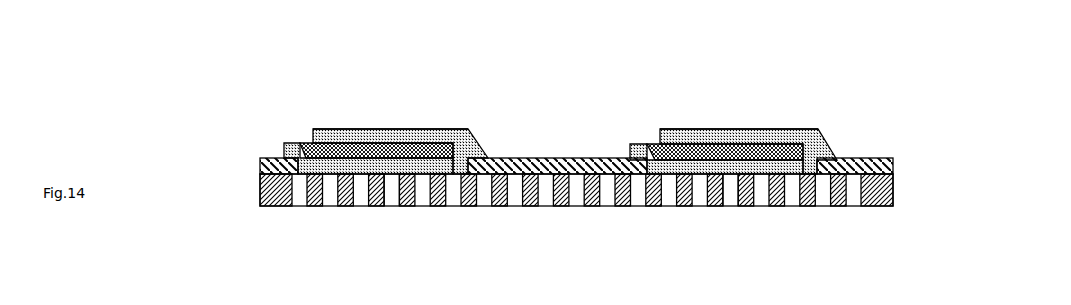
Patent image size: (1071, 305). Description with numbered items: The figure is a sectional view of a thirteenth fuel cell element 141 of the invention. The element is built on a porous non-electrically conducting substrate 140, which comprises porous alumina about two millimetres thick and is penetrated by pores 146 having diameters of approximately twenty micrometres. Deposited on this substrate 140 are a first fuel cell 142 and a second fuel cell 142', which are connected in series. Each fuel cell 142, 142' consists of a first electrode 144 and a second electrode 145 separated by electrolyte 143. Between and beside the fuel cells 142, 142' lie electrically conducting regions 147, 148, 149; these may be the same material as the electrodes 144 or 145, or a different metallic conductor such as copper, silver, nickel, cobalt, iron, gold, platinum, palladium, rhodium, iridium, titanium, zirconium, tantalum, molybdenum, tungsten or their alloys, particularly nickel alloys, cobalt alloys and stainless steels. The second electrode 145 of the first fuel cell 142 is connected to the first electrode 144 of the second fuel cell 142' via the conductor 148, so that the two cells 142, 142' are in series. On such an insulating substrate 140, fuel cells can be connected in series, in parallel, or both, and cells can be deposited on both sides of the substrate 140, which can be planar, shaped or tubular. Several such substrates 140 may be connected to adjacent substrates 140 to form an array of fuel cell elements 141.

The porous non-electrically conducting substrate 140 is at (838, 208).
The fuel cell element 141 is at (528, 99).
The first fuel cell 142 is at (400, 110).
The second fuel cell 142' is at (748, 113).
The electrolyte 143 is at (307, 142).
The first electrode 144 is at (293, 147).
The second electrode 145 is at (567, 108).
The pores 146 is at (392, 190).
The electrically conducting region 147 is at (260, 166).
The conductor 148 is at (507, 158).
The electrically conducting region 149 is at (868, 160).